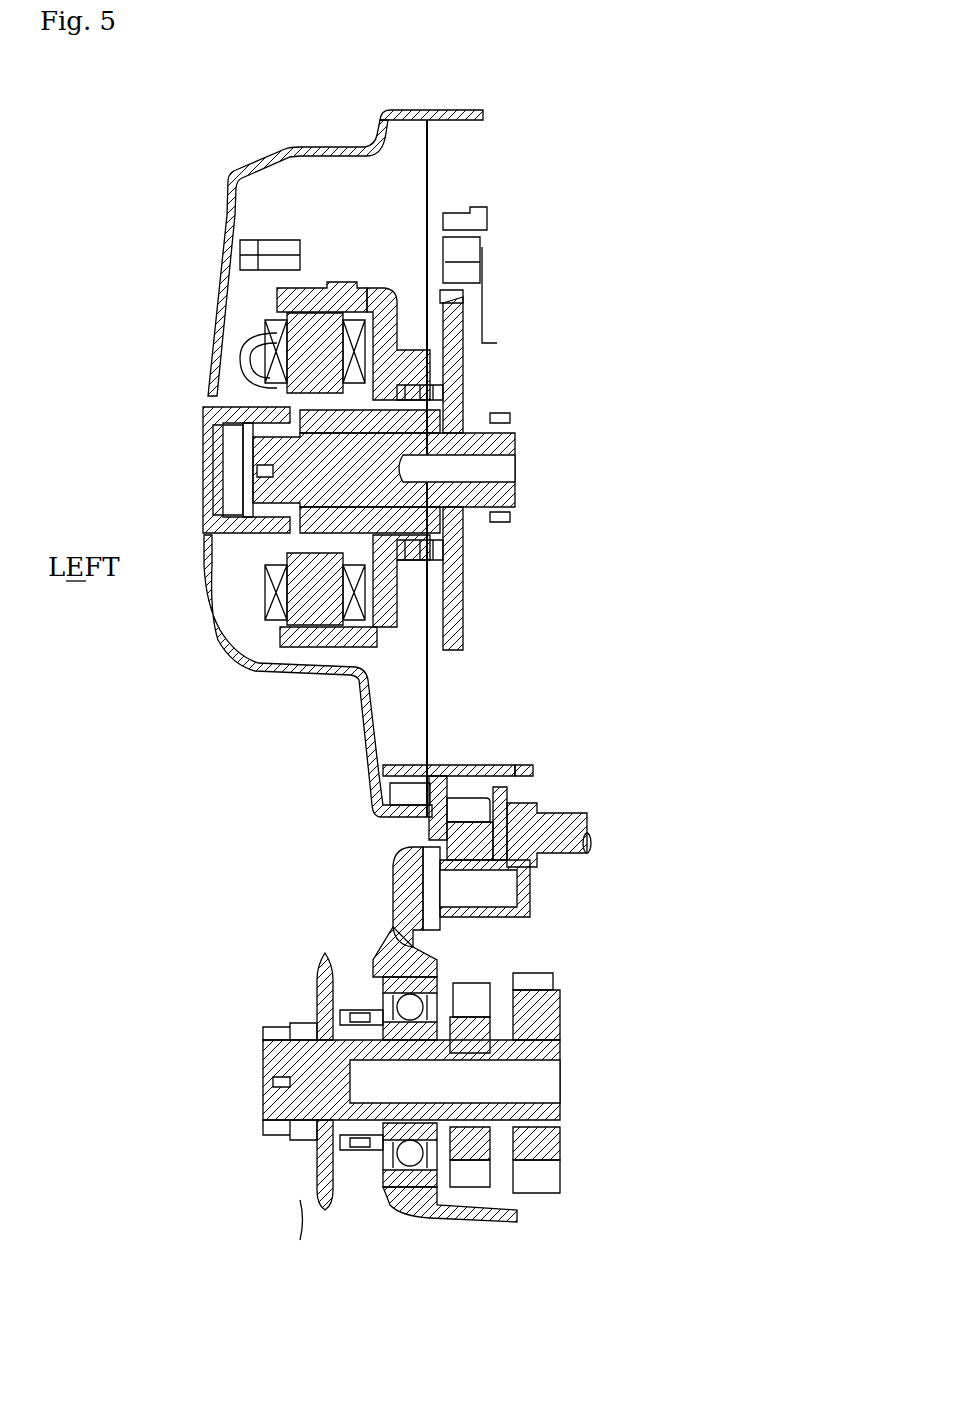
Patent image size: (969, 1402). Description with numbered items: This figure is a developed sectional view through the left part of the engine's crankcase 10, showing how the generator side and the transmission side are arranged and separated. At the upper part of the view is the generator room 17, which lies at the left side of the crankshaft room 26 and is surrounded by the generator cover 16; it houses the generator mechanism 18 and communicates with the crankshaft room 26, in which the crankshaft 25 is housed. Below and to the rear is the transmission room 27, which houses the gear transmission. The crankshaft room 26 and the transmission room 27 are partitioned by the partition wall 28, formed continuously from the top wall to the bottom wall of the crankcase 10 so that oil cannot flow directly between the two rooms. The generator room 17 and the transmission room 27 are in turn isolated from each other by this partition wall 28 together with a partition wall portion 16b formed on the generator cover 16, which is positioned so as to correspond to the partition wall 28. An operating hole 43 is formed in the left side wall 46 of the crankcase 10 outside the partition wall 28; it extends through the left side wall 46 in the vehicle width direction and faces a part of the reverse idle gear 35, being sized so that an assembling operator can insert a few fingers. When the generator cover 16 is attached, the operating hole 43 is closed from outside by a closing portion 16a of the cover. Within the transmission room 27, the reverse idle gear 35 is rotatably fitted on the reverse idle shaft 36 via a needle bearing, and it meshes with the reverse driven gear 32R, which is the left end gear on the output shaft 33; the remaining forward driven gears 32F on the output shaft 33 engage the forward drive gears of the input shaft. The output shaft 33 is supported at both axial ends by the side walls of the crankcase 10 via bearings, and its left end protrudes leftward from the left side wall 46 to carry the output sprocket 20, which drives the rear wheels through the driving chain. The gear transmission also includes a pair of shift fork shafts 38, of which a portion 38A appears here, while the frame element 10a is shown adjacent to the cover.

The crankcase 10 is at (420, 78).
The body frame plate 10a is at (431, 110).
The generator room 17 is at (345, 196).
The crankshaft room 26 is at (469, 150).
The generator mechanism 18 is at (262, 303).
The crankshaft 25 is at (507, 437).
The generator cover 16 is at (210, 622).
The closing portion 16a is at (375, 800).
The partition wall portion 16b is at (410, 766).
The partition wall 28 is at (497, 765).
The operating hole 43 is at (450, 765).
The reverse idle gear 35 is at (484, 803).
The shift fork shafts 38 is at (594, 849).
The support shaft end 38A is at (591, 845).
The reverse idle shaft 36 is at (510, 912).
The left side wall 46 is at (412, 943).
The transmission room 27 is at (570, 943).
The output shaft 33 is at (553, 1112).
The output sprocket 20 is at (323, 1210).
The reverse driven gear 32R is at (470, 1195).
The forward driven gears 32F is at (543, 1190).